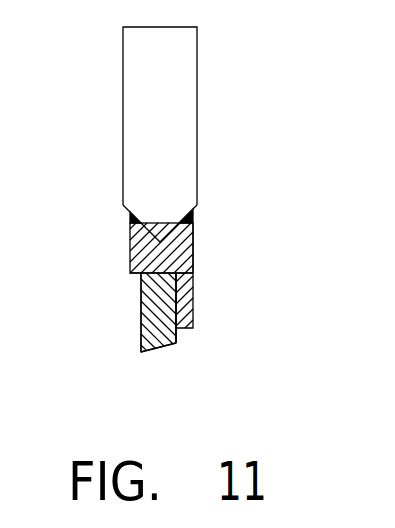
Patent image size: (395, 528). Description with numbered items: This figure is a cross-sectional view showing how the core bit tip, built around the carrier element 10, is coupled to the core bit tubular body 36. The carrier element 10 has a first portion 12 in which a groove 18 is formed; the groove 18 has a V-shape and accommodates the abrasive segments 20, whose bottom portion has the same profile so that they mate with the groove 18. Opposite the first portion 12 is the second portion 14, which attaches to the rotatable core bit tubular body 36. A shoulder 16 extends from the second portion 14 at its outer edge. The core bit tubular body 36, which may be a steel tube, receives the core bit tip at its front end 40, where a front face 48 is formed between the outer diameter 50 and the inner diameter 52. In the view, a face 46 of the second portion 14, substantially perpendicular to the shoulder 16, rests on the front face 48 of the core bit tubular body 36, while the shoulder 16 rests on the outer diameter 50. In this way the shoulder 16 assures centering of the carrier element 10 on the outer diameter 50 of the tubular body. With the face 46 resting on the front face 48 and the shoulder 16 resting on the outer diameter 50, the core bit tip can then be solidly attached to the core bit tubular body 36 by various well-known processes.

The abrasive segments 20 is at (183, 93).
The groove 18 is at (152, 240).
The first portion 12 is at (195, 215).
The carrier element 10 is at (182, 242).
The second portion 14 is at (193, 259).
The face 46 is at (130, 272).
The shoulder 16 is at (193, 283).
The front face 48 is at (140, 296).
The outer diameter 50 is at (175, 307).
The inner diameter 52 is at (141, 330).
The front end 40 is at (177, 338).
The core bit tubular body 36 is at (148, 351).